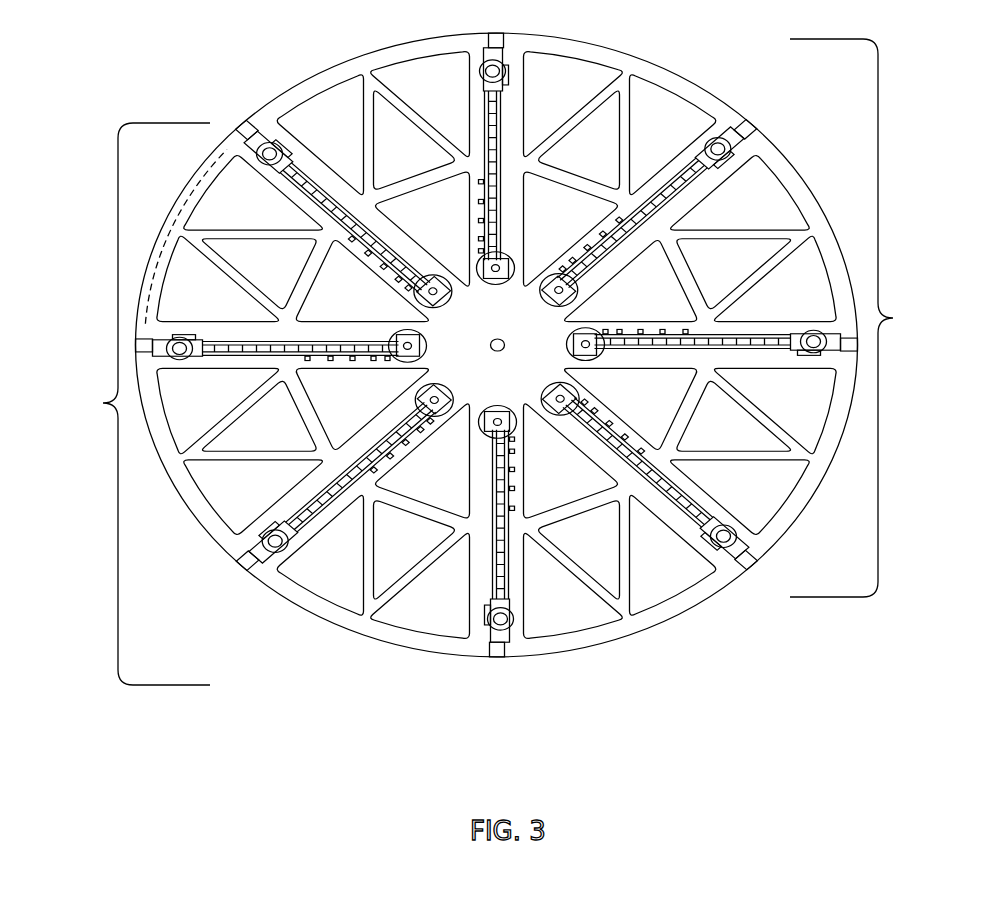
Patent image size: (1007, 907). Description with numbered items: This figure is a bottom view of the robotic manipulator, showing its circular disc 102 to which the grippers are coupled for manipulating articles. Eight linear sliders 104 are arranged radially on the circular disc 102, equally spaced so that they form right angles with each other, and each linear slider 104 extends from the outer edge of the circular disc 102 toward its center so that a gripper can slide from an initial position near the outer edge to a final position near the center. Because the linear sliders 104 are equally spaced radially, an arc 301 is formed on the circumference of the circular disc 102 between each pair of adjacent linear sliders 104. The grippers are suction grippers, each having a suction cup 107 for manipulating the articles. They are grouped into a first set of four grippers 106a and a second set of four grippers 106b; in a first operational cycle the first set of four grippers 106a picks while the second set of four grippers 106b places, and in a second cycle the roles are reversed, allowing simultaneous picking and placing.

The circular disc 102 is at (373, 503).
The linear slider 104 is at (497, 523).
The first set of four grippers 106a is at (872, 318).
The second set of four grippers 106b is at (127, 404).
The suction cup 107 is at (263, 537).
The arc 301 is at (153, 250).